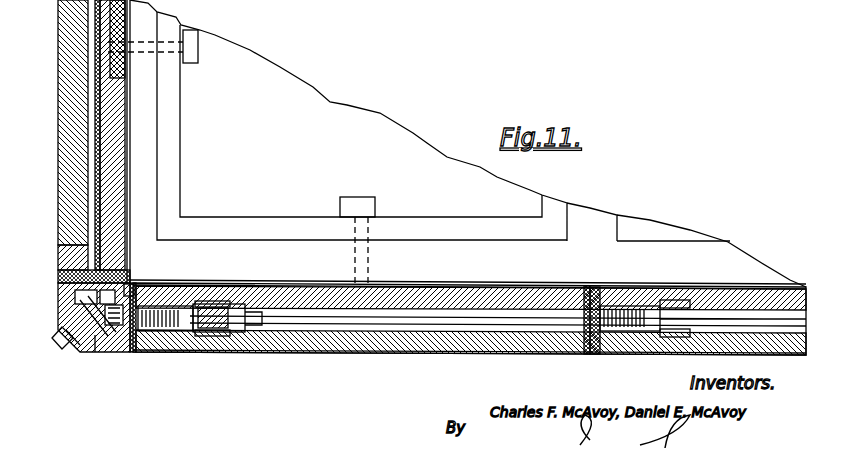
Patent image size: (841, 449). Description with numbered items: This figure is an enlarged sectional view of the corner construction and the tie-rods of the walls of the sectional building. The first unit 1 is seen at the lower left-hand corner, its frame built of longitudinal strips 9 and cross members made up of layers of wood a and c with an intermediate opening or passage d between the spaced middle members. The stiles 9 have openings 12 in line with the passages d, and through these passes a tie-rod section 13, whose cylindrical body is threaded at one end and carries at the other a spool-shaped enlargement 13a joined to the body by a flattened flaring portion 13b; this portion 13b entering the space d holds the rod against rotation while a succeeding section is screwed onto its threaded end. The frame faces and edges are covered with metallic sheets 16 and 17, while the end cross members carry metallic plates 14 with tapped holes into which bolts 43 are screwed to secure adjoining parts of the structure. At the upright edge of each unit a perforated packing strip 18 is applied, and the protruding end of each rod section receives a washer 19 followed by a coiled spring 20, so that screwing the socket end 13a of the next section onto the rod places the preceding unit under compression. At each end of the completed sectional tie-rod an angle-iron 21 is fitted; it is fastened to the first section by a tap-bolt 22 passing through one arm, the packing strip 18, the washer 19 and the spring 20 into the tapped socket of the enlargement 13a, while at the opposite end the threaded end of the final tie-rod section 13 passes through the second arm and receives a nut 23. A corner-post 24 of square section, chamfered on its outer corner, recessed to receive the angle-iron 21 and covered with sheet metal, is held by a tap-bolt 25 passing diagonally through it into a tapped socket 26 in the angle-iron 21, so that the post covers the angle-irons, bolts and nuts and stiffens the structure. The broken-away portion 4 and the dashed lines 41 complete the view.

The first unit 1 is at (130, 232).
The broken-away panel 4 is at (468, 143).
The longitudinal strips 9 is at (62, 248).
The openings 12 is at (240, 333).
The tie-rod section 13 is at (100, 190).
The spool-shaped enlargement 13a is at (210, 290).
The flattened portion 13b is at (690, 338).
The metallic plates 14 is at (393, 280).
The metallic sheet 16 is at (126, 75).
The metallic sheet 17 is at (60, 46).
The packing strip 18 is at (60, 283).
The washer 19 is at (150, 284).
The coiled spring 20 is at (188, 345).
The angle-iron 21 is at (133, 284).
The tap-bolt 22 is at (112, 352).
The nut 23 is at (56, 347).
The corner-post 24 is at (90, 352).
The tap-bolt 25 is at (80, 352).
The tapped hole or socket 26 is at (95, 352).
The guide line 41 is at (292, 217).
The bolt 43 is at (198, 52).
The layer of wood a is at (112, 150).
The layer of wood c is at (65, 118).
The opening or passage d is at (182, 204).